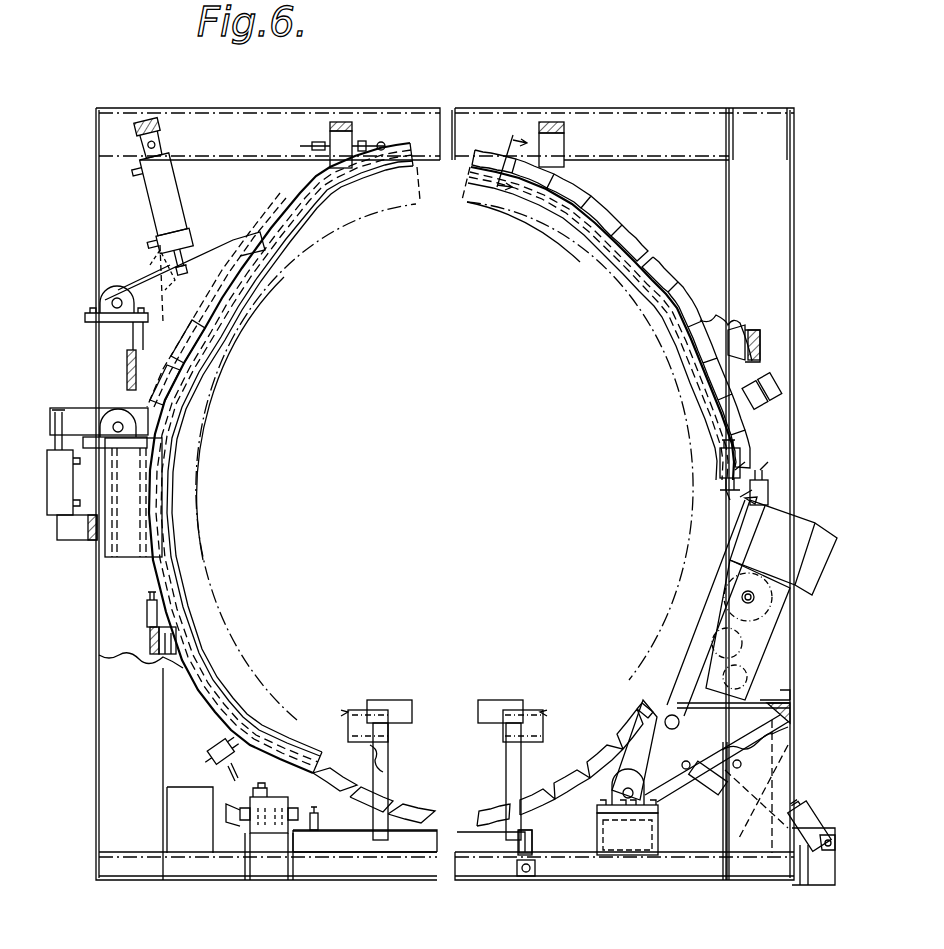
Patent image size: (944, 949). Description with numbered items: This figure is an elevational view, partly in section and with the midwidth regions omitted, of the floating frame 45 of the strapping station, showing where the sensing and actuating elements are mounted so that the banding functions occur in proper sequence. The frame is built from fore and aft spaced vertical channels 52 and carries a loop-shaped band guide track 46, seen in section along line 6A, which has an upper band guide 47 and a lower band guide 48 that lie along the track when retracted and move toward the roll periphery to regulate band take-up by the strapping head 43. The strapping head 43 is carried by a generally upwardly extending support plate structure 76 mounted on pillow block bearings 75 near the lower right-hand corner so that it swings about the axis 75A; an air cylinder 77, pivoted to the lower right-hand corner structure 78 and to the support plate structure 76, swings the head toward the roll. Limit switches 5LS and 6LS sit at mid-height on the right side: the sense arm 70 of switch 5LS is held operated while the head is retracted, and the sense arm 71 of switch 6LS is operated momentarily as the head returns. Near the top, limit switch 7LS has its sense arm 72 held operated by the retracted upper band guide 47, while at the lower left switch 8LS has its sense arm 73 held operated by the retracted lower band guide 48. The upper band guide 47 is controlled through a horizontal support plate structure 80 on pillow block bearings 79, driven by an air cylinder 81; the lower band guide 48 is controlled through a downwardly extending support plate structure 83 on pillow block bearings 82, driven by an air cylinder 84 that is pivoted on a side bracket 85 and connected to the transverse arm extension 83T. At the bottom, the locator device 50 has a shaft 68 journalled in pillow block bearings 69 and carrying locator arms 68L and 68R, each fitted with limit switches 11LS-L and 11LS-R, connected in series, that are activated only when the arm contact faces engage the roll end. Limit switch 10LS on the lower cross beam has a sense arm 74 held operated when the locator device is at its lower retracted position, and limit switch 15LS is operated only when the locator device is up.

The floating frame 45 is at (755, 98).
The band guide track 46 is at (658, 246).
The upper band guide 47 is at (352, 200).
The lower band guide 48 is at (226, 682).
The locator device 50 is at (528, 772).
The vertical channels 52 is at (100, 196).
The strapping head 43 is at (766, 551).
The section line 6A is at (497, 156).
The limit switch 7LS is at (345, 130).
The sense arm 72 is at (385, 140).
The air cylinder 81 is at (170, 196).
The pillow block bearings 79 is at (118, 294).
The support plate structure 80 is at (218, 279).
The pillow block bearings 82 is at (116, 424).
The transverse arm extension 83T is at (80, 406).
The support plate structure 83 is at (138, 473).
The air cylinder 84 is at (54, 500).
The side bracket 85 is at (80, 528).
The sense arm 73 is at (147, 608).
The limit switch 8LS is at (150, 660).
The pillow block bearings 69 is at (240, 838).
The limit switch 15LS is at (320, 830).
The shaft 68 is at (405, 843).
The locator arm 68L is at (385, 785).
The locator arm 68R is at (506, 790).
The limit switch 11LS-L is at (348, 708).
The limit switch 11LS-R is at (540, 722).
The sense arm 74 is at (510, 850).
The limit switch 10LS is at (525, 876).
The limit switch 6LS is at (720, 460).
The sense arm 71 is at (734, 491).
The limit switch 5LS is at (770, 500).
The sense arm 70 is at (752, 495).
The support plate structure 76 is at (708, 736).
The pillow block bearings 75 is at (630, 790).
The axis 75A is at (640, 800).
The air cylinder 77 is at (752, 792).
The lower right-hand corner structure 78 is at (825, 875).